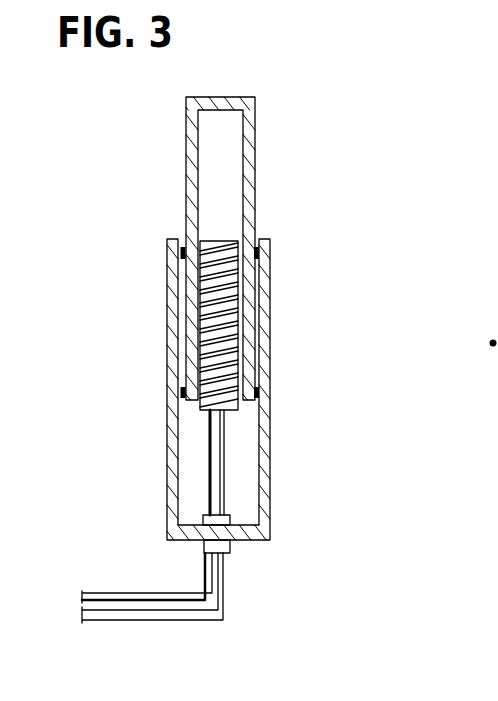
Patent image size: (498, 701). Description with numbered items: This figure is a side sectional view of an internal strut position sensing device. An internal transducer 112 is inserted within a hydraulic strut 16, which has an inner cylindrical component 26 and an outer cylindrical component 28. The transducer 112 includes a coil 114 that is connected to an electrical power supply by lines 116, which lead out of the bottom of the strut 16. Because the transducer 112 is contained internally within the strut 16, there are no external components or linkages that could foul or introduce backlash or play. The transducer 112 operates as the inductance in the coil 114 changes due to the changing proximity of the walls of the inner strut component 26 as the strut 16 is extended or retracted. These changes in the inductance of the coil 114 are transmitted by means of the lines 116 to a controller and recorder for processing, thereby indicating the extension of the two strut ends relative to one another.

The hydraulic strut 16 is at (298, 396).
The inner cylindrical component 26 is at (256, 180).
The outer cylindrical component 28 is at (268, 332).
The internal transducer 112 is at (196, 322).
The coil 114 is at (184, 373).
The lines 116 is at (130, 594).